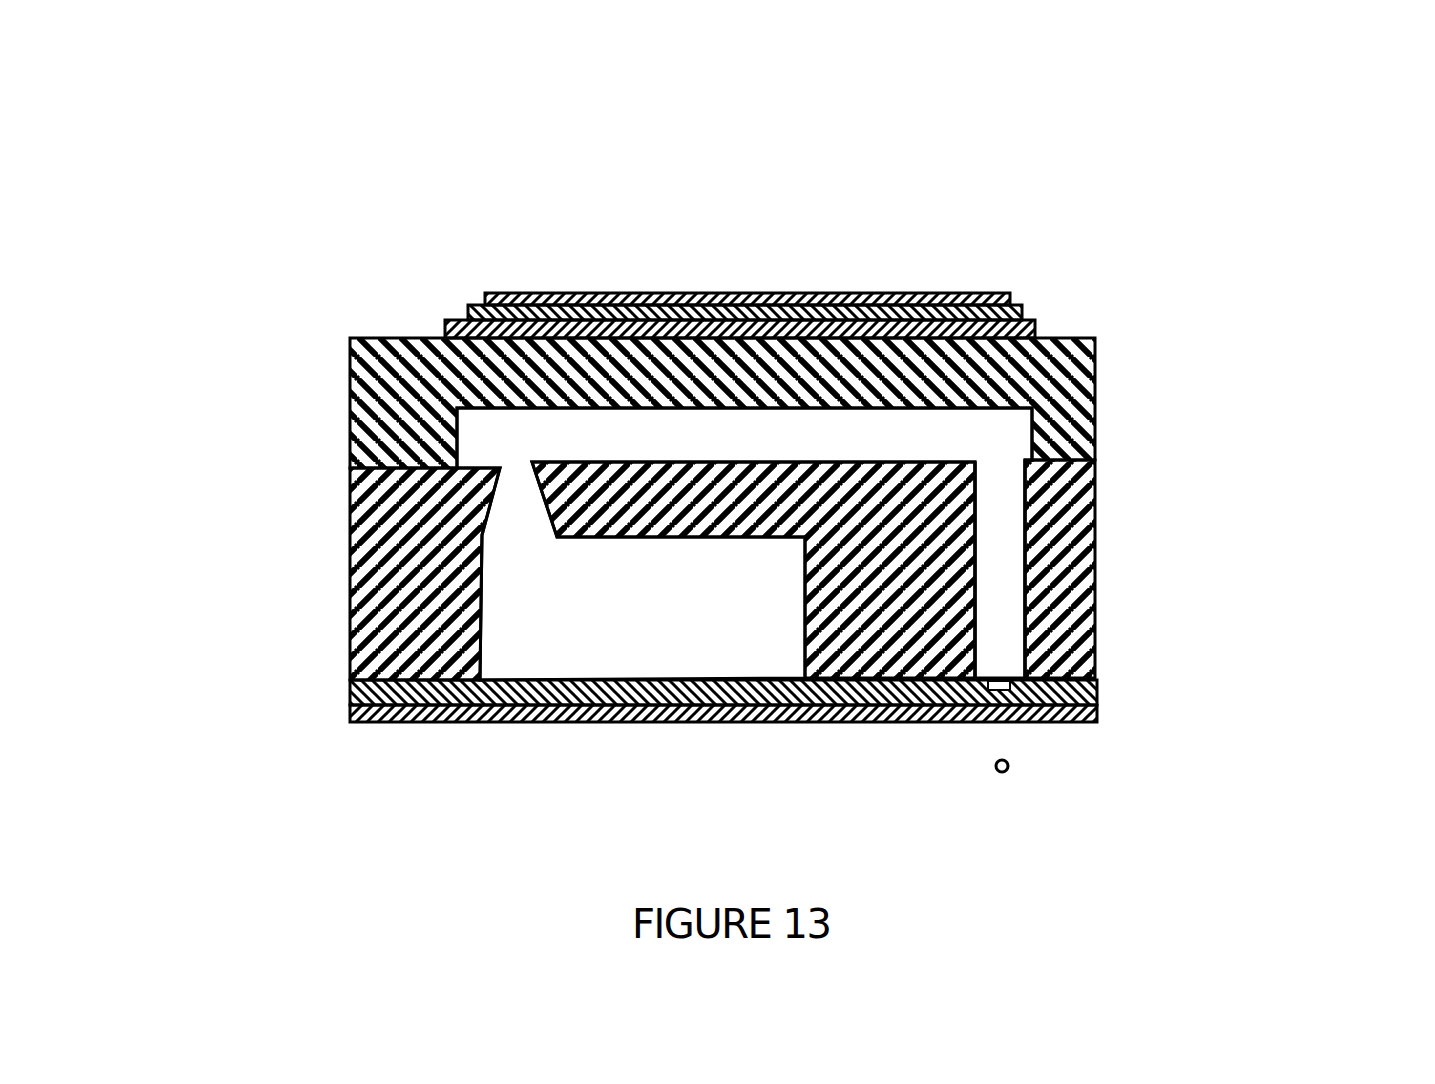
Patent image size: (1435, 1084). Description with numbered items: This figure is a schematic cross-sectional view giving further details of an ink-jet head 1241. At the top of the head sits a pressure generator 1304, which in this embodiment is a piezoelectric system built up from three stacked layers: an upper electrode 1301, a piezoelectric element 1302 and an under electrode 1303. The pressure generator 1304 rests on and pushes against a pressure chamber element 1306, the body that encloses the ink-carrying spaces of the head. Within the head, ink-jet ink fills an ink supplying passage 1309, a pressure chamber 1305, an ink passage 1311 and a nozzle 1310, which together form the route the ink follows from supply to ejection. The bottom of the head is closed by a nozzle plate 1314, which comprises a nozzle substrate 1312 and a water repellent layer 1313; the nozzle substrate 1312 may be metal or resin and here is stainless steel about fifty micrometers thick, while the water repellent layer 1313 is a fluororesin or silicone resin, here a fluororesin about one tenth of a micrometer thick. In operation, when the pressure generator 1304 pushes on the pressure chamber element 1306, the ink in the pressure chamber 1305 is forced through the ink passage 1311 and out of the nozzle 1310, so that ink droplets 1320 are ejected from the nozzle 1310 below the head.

The ink-jet head 1241 is at (1298, 258).
The upper electrode 1301 is at (658, 187).
The piezoelectric element 1302 is at (845, 305).
The under electrode 1303 is at (756, 318).
The pressure generator 1304 is at (740, 216).
The pressure chamber 1305 is at (540, 438).
The pressure chamber element 1306 is at (348, 420).
The ink supplying passage 1309 is at (642, 600).
The nozzle 1310 is at (1005, 693).
The ink passage 1311 is at (1007, 540).
The nozzle substrate 1312 is at (350, 697).
The water repellent layer 1313 is at (350, 720).
The nozzle plate 1314 is at (591, 702).
The ink droplets 1320 is at (1012, 769).